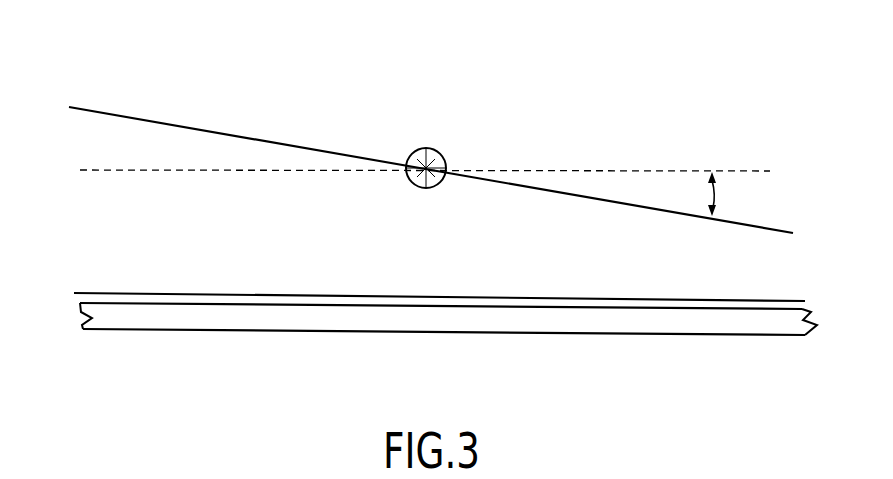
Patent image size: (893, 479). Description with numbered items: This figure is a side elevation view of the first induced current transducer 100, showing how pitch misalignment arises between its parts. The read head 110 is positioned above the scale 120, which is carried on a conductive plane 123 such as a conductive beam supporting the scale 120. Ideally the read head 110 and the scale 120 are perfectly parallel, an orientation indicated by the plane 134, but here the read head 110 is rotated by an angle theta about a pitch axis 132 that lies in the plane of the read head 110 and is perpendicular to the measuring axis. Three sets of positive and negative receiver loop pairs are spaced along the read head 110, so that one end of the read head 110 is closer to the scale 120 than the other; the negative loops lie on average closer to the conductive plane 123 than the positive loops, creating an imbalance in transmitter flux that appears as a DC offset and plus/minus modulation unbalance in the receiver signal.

The first induced current transducer 100 is at (569, 104).
The read head 110 is at (116, 112).
The scale 120 is at (95, 284).
The conductive plane 123 is at (547, 320).
The pitch axis 132 is at (431, 147).
The plane 134 is at (653, 168).